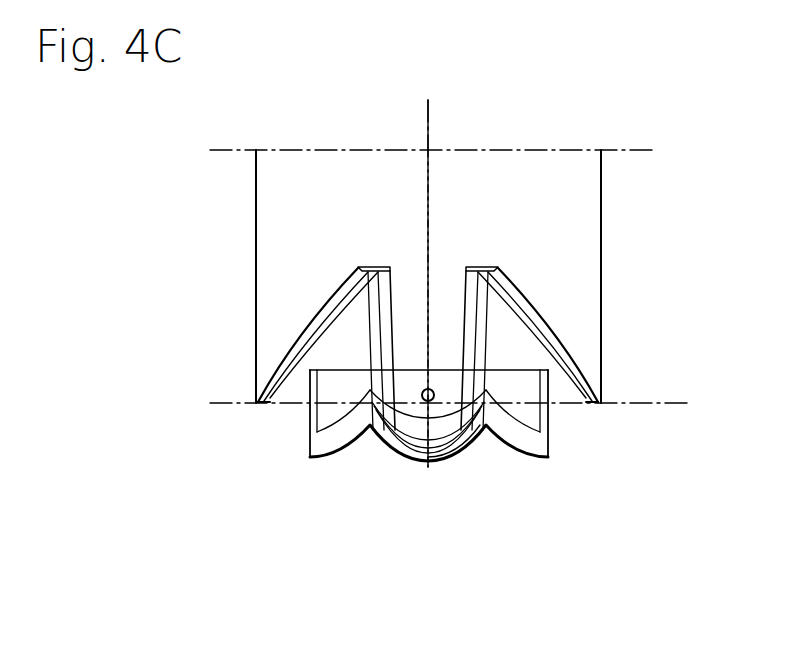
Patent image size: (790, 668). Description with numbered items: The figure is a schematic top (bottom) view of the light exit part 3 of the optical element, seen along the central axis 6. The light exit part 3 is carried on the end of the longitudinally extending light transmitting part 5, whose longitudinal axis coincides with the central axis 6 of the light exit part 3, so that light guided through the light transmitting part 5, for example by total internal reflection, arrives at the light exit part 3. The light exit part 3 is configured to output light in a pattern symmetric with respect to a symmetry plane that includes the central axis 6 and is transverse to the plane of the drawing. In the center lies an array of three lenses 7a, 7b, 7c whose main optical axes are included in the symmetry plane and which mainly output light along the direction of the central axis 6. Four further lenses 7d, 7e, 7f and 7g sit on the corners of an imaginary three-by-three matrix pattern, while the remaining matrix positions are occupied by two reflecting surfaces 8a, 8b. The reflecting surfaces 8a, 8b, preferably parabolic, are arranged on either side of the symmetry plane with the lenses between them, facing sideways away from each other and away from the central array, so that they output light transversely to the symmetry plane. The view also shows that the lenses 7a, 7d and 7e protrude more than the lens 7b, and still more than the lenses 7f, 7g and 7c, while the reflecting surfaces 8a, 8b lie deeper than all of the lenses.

The light exit part 3 is at (450, 427).
The light transmitting part 5 is at (602, 200).
The central axis 6 is at (427, 123).
The lens 7a is at (430, 450).
The lens 7b is at (483, 443).
The lens 7c is at (420, 410).
The lens 7d is at (333, 440).
The lens 7e is at (528, 445).
The lens 7f is at (323, 415).
The lens 7g is at (523, 415).
The reflecting surface 8a is at (545, 328).
The reflecting surface 8b is at (303, 337).